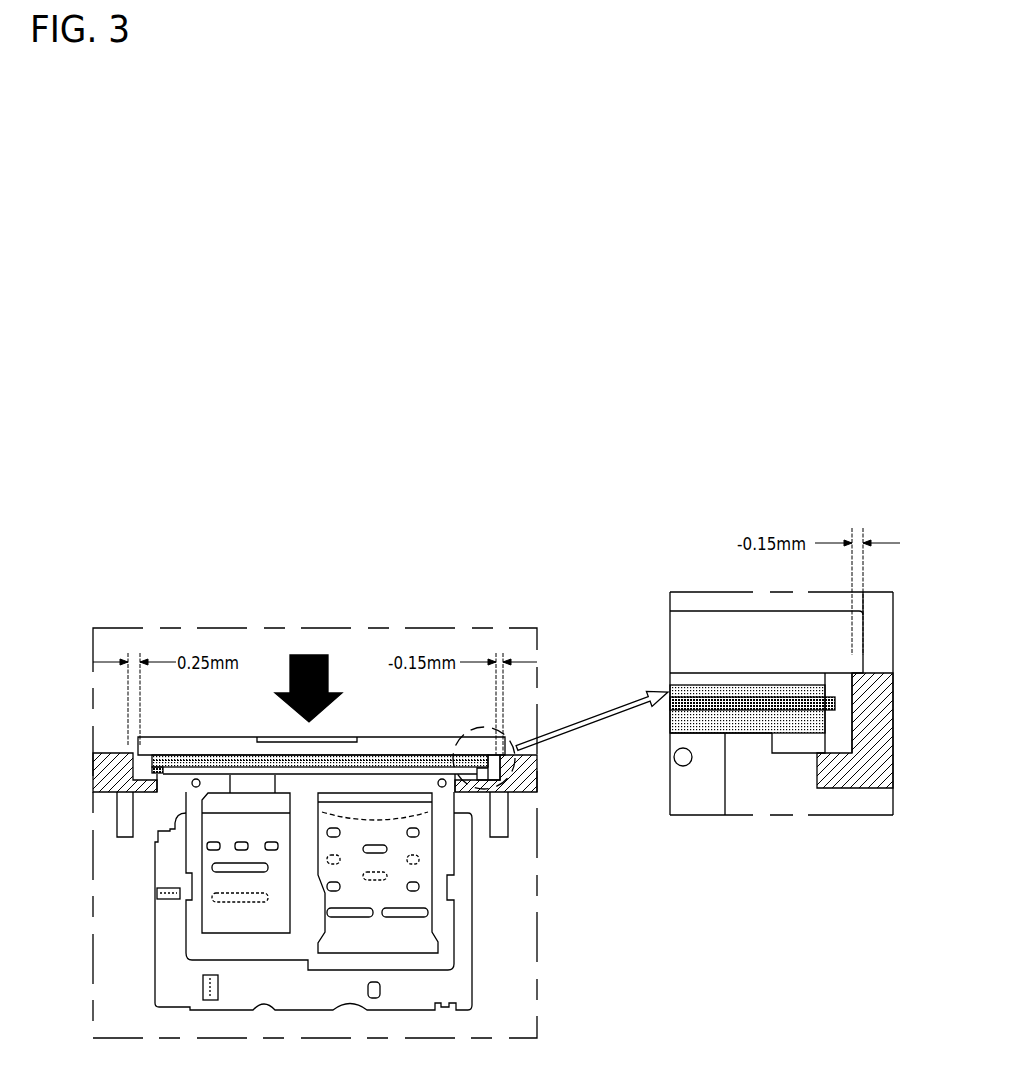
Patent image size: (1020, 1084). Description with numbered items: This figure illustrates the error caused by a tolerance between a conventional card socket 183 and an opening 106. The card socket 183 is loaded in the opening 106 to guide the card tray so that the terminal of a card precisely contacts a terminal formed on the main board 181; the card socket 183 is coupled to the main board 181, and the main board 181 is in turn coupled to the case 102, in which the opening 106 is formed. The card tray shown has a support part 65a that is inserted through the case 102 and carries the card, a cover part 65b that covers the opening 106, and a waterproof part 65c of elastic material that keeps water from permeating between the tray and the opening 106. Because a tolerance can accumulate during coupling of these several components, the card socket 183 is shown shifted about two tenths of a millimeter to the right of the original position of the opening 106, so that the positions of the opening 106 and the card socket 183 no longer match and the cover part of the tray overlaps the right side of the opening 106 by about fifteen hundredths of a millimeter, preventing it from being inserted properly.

The support part 65a is at (697, 807).
The cover part 65b is at (244, 745).
The waterproof part 65c is at (374, 757).
The case 102 is at (520, 774).
The opening 106 is at (750, 783).
The main board 181 is at (517, 978).
The card socket 183 is at (172, 965).